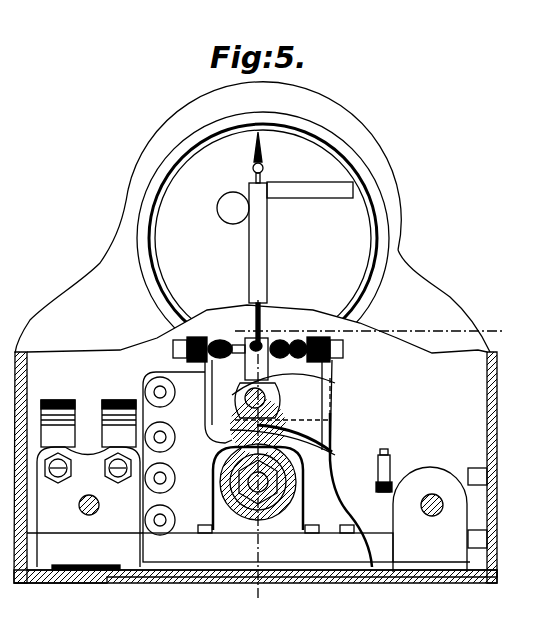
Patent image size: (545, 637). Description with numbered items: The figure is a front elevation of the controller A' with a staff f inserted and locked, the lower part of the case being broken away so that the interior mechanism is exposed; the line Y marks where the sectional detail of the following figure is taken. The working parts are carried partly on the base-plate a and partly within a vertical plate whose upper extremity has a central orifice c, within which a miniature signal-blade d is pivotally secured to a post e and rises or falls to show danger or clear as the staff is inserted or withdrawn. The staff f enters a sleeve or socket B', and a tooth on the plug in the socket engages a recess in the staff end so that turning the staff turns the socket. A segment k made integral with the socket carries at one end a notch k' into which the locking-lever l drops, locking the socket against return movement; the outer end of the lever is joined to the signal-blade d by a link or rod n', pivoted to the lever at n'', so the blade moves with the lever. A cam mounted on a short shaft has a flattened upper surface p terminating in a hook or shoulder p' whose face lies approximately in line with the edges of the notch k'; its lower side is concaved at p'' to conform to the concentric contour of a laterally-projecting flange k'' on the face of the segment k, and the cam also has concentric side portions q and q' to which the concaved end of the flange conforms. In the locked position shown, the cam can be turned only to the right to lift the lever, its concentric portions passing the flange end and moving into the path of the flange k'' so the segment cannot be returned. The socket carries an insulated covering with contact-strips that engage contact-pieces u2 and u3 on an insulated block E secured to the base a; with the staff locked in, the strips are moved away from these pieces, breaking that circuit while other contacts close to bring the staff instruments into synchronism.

The controller A' is at (255, 390).
The central orifice c is at (355, 232).
The miniature signal-blade d is at (310, 200).
The post e is at (252, 262).
The link or rod n' is at (281, 310).
The pivot of link to locking-lever n'' is at (266, 347).
The locking-lever l is at (241, 340).
The section line Y Y is at (377, 459).
The notch or depression k' is at (268, 410).
The upper surface of cam p is at (269, 414).
The hook or shoulder p' is at (298, 379).
The concentric side portion q' is at (282, 425).
The laterally-projecting flange k'' is at (310, 441).
The segment k is at (355, 485).
The sleeve or socket B' is at (244, 459).
The contact-piece u3 is at (220, 490).
The contact-piece u2 is at (306, 490).
The staff f is at (243, 503).
The insulated block E is at (338, 562).
The base-plate a is at (391, 568).
The concentric side portion q is at (175, 453).
The concaved lower side of cam p'' is at (121, 485).
The binding post block s is at (432, 512).